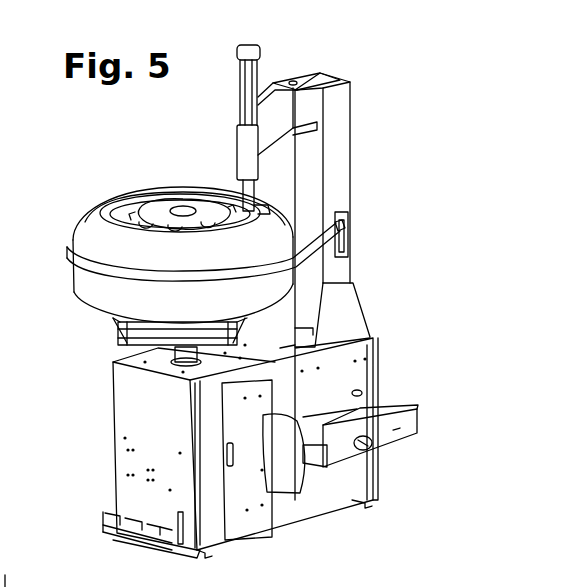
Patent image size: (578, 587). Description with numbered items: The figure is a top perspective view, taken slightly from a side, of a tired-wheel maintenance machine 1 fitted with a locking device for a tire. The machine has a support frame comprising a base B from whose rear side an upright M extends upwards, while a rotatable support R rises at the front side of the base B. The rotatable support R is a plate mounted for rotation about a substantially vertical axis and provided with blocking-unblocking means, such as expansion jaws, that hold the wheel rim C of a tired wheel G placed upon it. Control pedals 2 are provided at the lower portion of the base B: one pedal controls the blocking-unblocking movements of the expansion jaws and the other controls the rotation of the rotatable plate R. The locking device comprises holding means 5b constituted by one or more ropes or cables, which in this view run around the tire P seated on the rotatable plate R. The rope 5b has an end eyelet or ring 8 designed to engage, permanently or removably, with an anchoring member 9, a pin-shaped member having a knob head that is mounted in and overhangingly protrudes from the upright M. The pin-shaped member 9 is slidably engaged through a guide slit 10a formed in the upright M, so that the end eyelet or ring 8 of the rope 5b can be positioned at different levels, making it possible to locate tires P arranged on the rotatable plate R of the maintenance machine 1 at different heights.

The tired-wheel maintenance machine 1 is at (499, 364).
The control pedals 2 is at (103, 500).
The holding means (rope or cable) 5b is at (77, 203).
The end eyelet or ring 8 is at (352, 207).
The anchoring member (pin-shaped member) 9 is at (350, 223).
The guide slit 10a is at (352, 247).
The base B is at (370, 375).
The wheel rim C is at (153, 212).
The tired wheel G is at (182, 184).
The upright M is at (334, 142).
The tire P is at (94, 205).
The rotatable support (rotatable plate) R is at (118, 334).